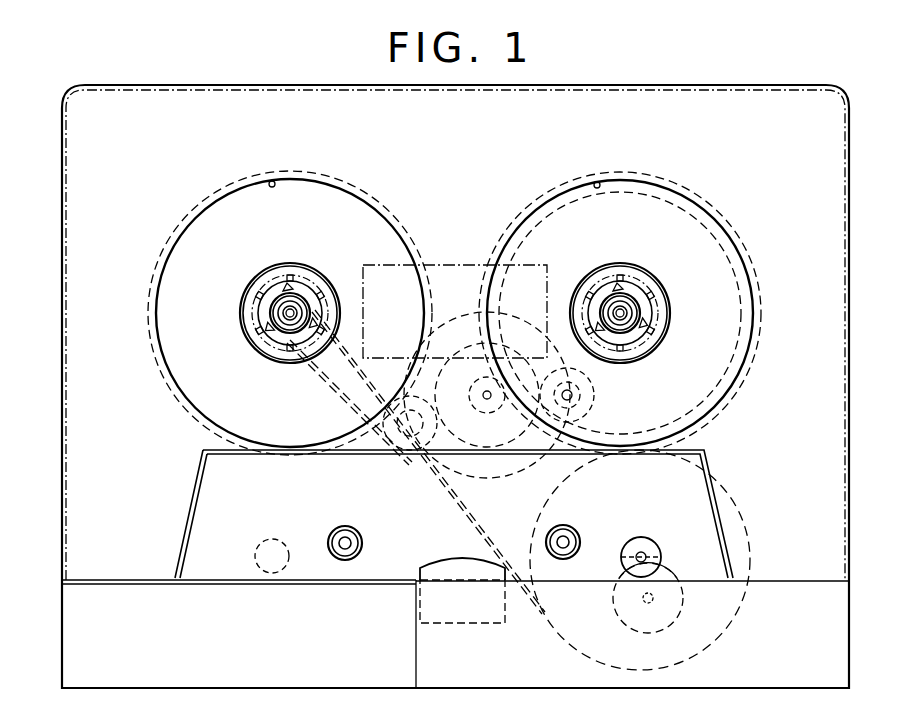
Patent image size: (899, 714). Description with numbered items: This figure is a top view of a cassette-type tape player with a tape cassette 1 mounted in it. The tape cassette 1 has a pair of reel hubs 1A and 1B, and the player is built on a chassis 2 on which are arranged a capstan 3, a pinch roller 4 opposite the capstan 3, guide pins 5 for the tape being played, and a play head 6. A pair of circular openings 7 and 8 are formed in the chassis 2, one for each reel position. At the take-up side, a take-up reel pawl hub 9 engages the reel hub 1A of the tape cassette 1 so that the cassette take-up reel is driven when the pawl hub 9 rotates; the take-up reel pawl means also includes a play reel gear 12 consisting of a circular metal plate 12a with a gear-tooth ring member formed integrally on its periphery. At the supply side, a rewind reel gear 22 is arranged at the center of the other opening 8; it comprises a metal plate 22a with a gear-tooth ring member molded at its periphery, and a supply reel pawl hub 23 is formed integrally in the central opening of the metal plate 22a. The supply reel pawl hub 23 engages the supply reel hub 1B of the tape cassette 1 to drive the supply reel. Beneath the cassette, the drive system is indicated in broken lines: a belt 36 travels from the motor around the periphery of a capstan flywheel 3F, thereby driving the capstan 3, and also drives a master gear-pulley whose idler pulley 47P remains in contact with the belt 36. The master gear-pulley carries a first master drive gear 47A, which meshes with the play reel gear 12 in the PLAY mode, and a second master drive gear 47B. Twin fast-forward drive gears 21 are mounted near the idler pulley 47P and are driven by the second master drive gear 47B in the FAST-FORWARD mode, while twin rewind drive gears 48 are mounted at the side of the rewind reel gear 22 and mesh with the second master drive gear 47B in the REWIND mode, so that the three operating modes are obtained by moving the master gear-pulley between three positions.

The tape cassette 1 is at (762, 110).
The chassis 2 is at (832, 136).
The capstan 3 is at (641, 553).
The capstan flywheel 3F is at (737, 522).
The pinch roller 4 is at (667, 578).
The guide pins 5 is at (363, 543).
The play head 6 is at (440, 570).
The circular opening 7 is at (597, 183).
The circular opening 8 is at (271, 182).
The take-up reel pawl hub 9 is at (636, 293).
The play reel gear 12 is at (676, 218).
The circular metal plate 12a is at (743, 291).
The reel hub 1A is at (652, 294).
The supply reel hub 1B is at (333, 283).
The twin fast-forward drive gears 21 is at (594, 396).
The rewind reel gear 22 is at (350, 196).
The metal plate 22a is at (158, 268).
The supply reel pawl hub 23 is at (270, 292).
The belt 36 is at (318, 362).
The first master drive gear 47A is at (487, 401).
The second master drive gear 47B is at (473, 345).
The idler pulley 47P is at (462, 475).
The twin rewind drive gears 48 is at (386, 446).